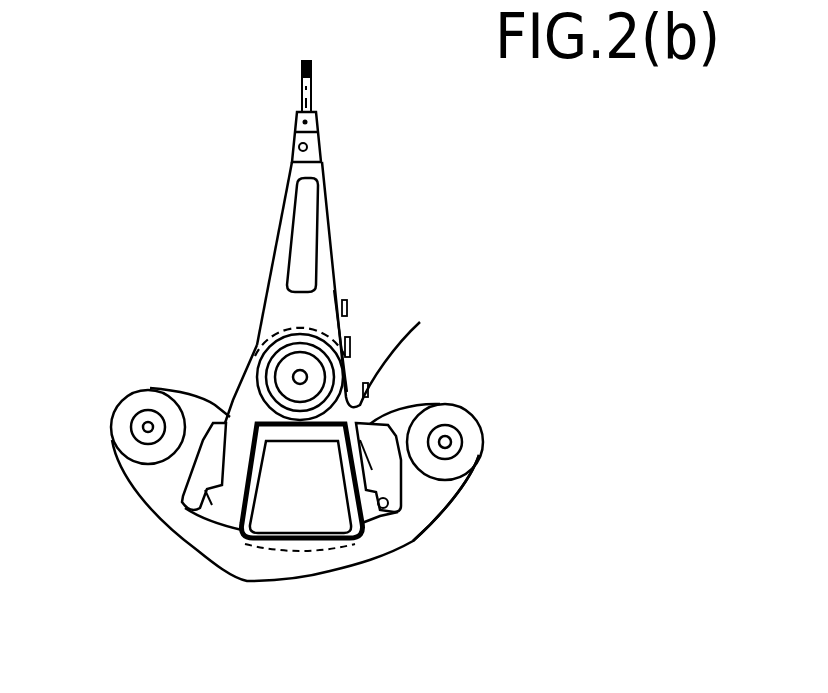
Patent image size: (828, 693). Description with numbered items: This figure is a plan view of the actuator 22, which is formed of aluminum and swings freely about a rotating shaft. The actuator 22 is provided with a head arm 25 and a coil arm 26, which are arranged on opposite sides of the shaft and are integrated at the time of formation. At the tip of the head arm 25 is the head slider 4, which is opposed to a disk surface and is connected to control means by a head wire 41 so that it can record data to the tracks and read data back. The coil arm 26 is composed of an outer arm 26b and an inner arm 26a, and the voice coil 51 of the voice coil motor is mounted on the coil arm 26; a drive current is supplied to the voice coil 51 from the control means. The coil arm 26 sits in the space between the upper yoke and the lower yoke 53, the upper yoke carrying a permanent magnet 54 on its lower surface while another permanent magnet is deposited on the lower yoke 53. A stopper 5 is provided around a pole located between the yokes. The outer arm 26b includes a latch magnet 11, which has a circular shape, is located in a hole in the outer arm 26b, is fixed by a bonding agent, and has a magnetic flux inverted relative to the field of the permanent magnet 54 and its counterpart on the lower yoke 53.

The head slider 4 is at (314, 69).
The stopper 5 is at (486, 447).
The latch magnet 11 is at (383, 510).
The actuator 22 is at (265, 322).
The head arm 25 is at (272, 258).
The coil arm 26 is at (247, 403).
The inner arm 26a is at (213, 510).
The outer arm 26b is at (360, 460).
The head wire 41 is at (392, 331).
The voice coil 51 is at (323, 572).
The lower yoke 53 is at (451, 503).
The permanent magnet 54 is at (188, 472).